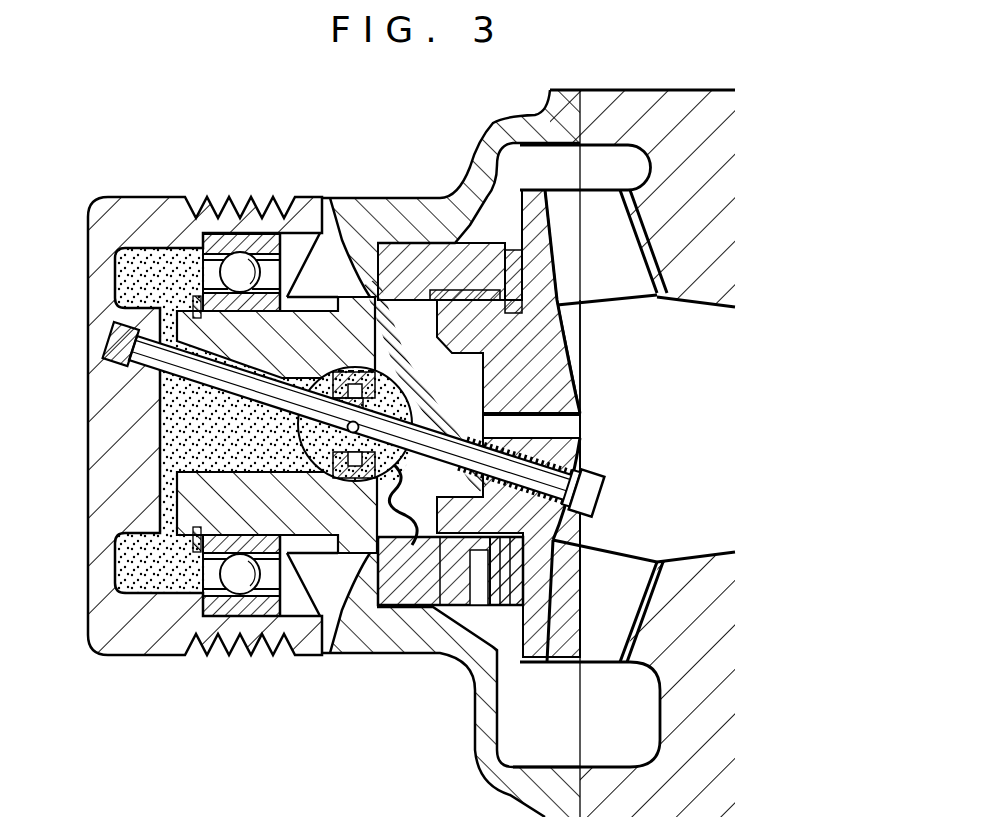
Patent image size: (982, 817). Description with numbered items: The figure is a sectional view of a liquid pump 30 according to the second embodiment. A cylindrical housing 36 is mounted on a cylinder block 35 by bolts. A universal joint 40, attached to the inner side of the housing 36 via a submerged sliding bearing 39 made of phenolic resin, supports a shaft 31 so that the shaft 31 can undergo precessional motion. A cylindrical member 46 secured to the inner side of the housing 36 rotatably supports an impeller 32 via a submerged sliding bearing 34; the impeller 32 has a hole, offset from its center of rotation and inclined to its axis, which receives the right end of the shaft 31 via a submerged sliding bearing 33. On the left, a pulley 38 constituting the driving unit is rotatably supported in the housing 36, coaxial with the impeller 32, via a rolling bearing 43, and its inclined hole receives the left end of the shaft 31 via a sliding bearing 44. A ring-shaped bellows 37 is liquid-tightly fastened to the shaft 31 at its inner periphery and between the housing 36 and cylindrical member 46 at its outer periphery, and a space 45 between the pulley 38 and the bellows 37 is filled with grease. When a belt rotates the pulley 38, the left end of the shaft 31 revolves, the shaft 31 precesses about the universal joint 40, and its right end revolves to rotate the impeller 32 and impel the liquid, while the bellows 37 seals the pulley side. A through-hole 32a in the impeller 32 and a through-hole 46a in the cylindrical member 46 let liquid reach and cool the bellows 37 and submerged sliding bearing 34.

The liquid pump 30 is at (640, 72).
The shaft 31 is at (265, 401).
The impeller 32 is at (620, 282).
The through-hole 32a is at (565, 428).
The submerged sliding bearing 33 is at (582, 455).
The submerged sliding bearing 34 is at (485, 312).
The cylinder block 35 is at (703, 279).
The housing 36 is at (410, 198).
The bellows 37 is at (403, 580).
The pulley 38 is at (117, 222).
The submerged sliding bearing 39 is at (340, 372).
The universal joint 40 is at (205, 496).
The rolling bearing 43 is at (241, 248).
The sliding bearing 44 is at (127, 367).
The space 45 is at (212, 452).
The cylindrical member 46 is at (413, 590).
The through-hole 46a is at (477, 590).